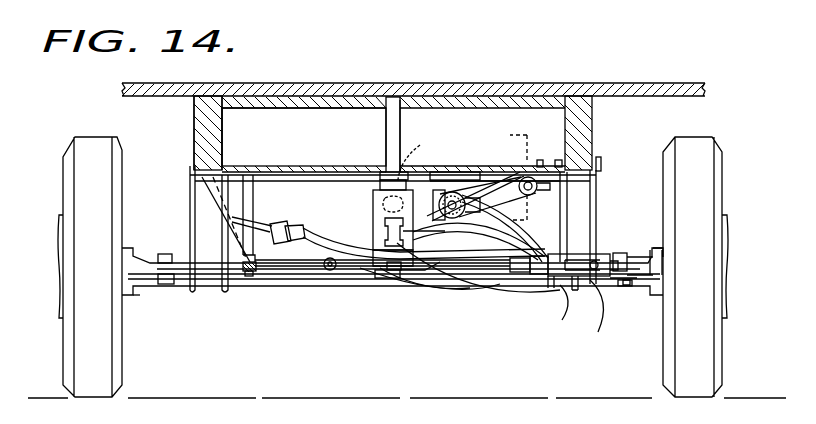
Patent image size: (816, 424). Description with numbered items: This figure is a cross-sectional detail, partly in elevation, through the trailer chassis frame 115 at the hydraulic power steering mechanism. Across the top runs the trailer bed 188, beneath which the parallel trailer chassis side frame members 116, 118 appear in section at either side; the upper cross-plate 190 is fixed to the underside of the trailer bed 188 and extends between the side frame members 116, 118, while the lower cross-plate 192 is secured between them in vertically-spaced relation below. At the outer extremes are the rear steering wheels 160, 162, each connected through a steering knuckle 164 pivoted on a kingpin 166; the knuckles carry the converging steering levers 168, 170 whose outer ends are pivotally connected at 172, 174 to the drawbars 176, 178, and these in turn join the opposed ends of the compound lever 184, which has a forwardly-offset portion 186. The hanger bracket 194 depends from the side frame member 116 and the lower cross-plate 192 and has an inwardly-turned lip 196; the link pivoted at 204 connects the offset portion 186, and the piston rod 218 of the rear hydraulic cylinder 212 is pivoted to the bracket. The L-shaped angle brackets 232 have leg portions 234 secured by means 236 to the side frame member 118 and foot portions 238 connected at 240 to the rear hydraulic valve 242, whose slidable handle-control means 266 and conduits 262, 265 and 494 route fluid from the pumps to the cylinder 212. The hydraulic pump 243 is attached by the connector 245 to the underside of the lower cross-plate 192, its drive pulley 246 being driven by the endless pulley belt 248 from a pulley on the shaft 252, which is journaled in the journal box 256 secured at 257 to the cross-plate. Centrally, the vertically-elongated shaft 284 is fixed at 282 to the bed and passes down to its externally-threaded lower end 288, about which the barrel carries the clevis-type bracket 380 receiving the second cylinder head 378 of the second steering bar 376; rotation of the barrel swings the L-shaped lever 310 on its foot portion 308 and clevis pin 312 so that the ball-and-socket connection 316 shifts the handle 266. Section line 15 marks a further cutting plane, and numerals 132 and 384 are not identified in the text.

The section line 15— 15 is at (510, 136).
The trailer chassis frame 115 is at (181, 117).
The trailer chassis side frame member 116 is at (200, 132).
The trailer chassis side frame member 118 is at (593, 132).
The post 132 is at (226, 288).
The rear steering wheel 160 is at (61, 352).
The rear steering wheel 162 is at (732, 341).
The steering knuckle 164 is at (142, 306).
The kingpin 166 is at (137, 256).
The steering lever 168 is at (156, 287).
The steering lever 170 is at (656, 264).
The pivotal connection 172 is at (168, 285).
The pivotal connection 174 is at (626, 289).
The drawbar 176 is at (205, 288).
The drawbar 178 is at (488, 286).
The compound lever 184 is at (350, 272).
The forwardly-offset portion 186 is at (295, 284).
The trailer bed 188 is at (362, 83).
The upper cross-plate 190 is at (335, 110).
The lower cross-plate 192 is at (337, 167).
The hanger bracket 194 is at (193, 207).
The lip 196 is at (225, 233).
The pivotal connection 204 is at (250, 277).
The rear hydraulic cylinder 212 is at (300, 228).
The reciprocating piston rod 218 is at (262, 227).
The L-shaped angle bracket 232 is at (611, 207).
The leg portion 234 is at (562, 238).
The conventional securing means 236 is at (601, 163).
The foot portion 238 is at (562, 300).
The fixed connection 240 is at (608, 260).
The rear hydraulic valve 242 is at (552, 288).
The front hydraulic pump 243 is at (432, 172).
The conventional connector 245 is at (466, 174).
The drive pulley 246 is at (424, 219).
The endless pulley belt 248 is at (490, 176).
The shaft 252 is at (533, 190).
The journal box 256 is at (539, 186).
The securing point 257 is at (540, 166).
The conduit 262 is at (258, 278).
The conduit 265 is at (520, 232).
The slidable handle-control means 266 is at (398, 182).
The fixed connection 282 is at (402, 104).
The vertically-elongated shaft 284 is at (402, 142).
The externally-threaded lower end 288 is at (380, 182).
The foot portion 308 is at (378, 278).
The L-shaped lever 310 is at (418, 283).
The clevis pin 312 is at (398, 280).
The ball-and-socket connection 316 is at (575, 292).
The second steering bar 376 is at (384, 226).
The second cylinder head 378 is at (420, 146).
The clevis-type bracket 380 is at (374, 196).
The actuator base 384 is at (376, 212).
The conduit 494 is at (315, 236).